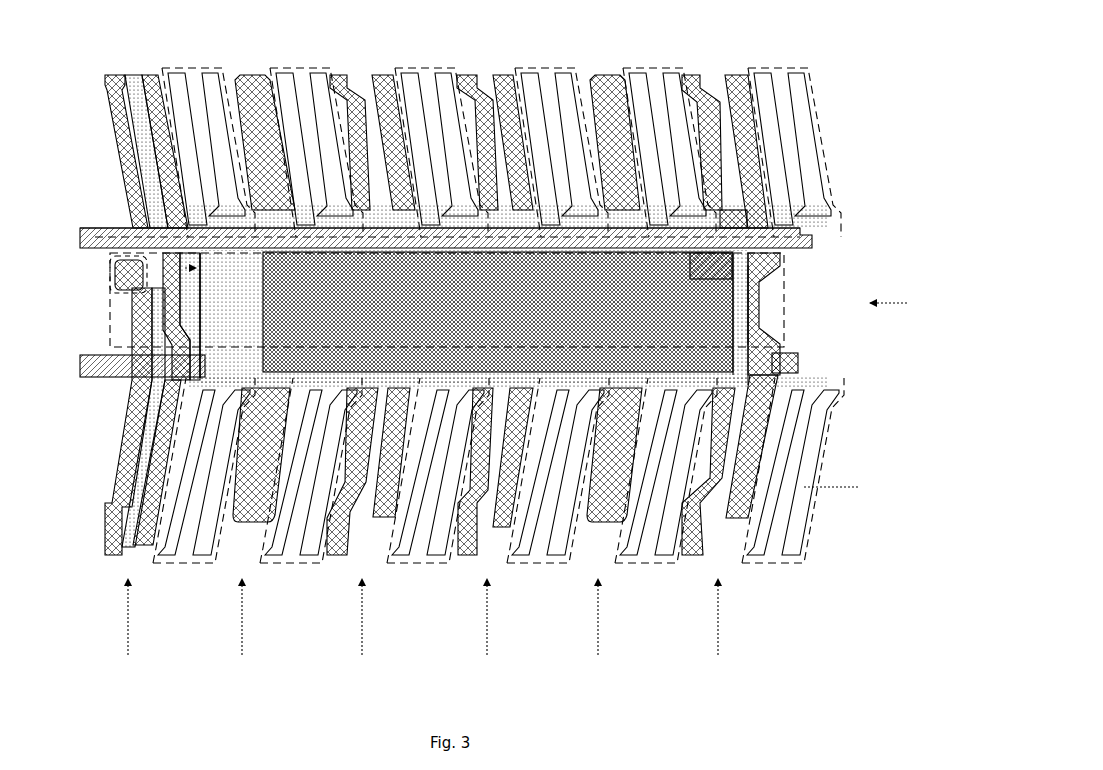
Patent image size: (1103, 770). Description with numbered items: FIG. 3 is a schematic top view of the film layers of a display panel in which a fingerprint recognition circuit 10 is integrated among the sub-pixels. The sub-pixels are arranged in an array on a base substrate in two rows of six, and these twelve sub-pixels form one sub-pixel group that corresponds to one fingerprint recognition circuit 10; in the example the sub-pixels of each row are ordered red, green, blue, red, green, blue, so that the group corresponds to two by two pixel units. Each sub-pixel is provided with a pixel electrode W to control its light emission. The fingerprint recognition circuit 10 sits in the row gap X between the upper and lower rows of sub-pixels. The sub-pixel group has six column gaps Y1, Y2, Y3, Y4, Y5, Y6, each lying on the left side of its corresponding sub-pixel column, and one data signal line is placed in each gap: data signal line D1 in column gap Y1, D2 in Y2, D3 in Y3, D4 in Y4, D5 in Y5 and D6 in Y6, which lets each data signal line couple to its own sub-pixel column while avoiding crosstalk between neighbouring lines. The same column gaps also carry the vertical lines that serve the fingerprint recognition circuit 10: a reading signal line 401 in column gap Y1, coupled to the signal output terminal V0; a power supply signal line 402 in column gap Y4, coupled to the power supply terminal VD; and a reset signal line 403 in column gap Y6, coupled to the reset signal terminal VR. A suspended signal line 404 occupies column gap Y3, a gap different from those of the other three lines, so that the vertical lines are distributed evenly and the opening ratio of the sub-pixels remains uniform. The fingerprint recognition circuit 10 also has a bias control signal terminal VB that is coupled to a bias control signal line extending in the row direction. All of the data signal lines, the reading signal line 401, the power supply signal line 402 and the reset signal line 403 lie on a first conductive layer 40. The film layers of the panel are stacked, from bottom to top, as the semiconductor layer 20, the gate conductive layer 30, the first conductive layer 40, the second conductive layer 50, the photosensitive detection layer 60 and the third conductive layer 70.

The fingerprint recognition circuit 10 is at (110, 323).
The semiconductor layer 20 is at (133, 292).
The gate conductive layer 30 is at (84, 242).
The first conductive layer 40 is at (127, 143).
The reading signal line 401 is at (115, 84).
The power supply signal line 402 is at (465, 78).
The reset signal line 403 is at (692, 77).
The suspended signal line 404 is at (335, 78).
The second conductive layer 50 is at (749, 318).
The photosensitive detection layer 60 is at (724, 337).
The third conductive layer 70 is at (114, 232).
The signal output terminal V0 is at (110, 272).
The power supply terminal VD is at (525, 273).
The bias control signal terminal VB is at (736, 269).
The reset signal terminal VR is at (750, 293).
The data signal line D1 is at (156, 74).
The data signal line D2 is at (247, 75).
The data signal line D3 is at (383, 75).
The data signal line D4 is at (501, 75).
The data signal line D5 is at (599, 77).
The data signal line D6 is at (735, 75).
The row gap X is at (896, 304).
The pixel electrode W is at (844, 488).
The column gap Y1 is at (127, 628).
The column gap Y2 is at (241, 628).
The column gap Y3 is at (361, 628).
The column gap Y4 is at (486, 628).
The column gap Y5 is at (597, 628).
The column gap Y6 is at (717, 628).